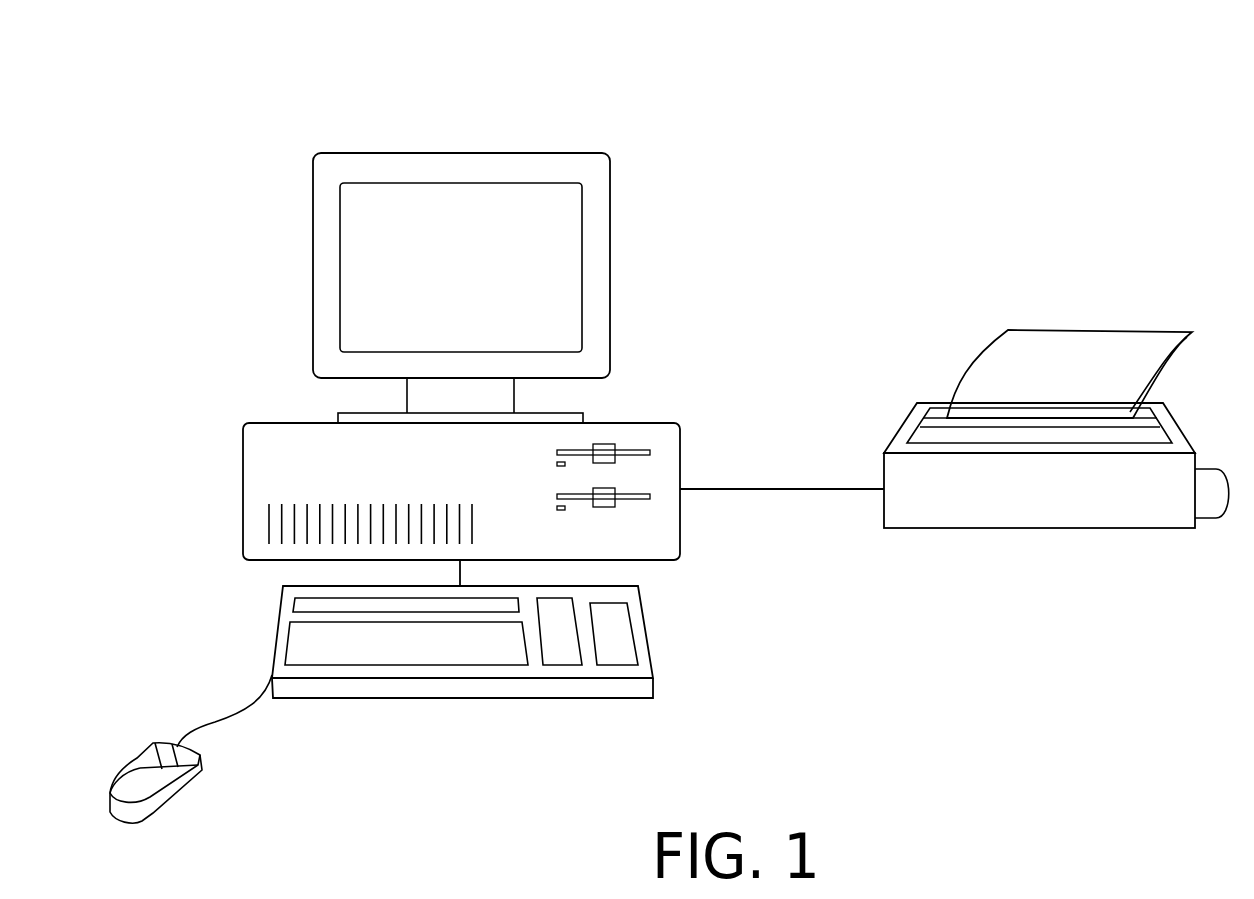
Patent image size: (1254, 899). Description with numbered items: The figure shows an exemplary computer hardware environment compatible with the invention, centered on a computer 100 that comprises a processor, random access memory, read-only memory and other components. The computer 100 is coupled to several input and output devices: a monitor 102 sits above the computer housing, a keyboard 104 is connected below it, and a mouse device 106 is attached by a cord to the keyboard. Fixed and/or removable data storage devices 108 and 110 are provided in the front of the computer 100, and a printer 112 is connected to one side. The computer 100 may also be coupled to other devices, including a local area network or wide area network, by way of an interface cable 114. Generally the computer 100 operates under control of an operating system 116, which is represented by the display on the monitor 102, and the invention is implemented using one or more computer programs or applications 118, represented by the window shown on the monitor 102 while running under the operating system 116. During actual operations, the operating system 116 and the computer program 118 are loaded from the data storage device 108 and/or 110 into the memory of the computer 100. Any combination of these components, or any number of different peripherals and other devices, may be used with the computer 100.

The computer 100 is at (614, 90).
The monitor 102 is at (313, 270).
The keyboard 104 is at (612, 690).
The mouse device 106 is at (135, 780).
The data storage device 108 is at (648, 450).
The data storage device 110 is at (635, 500).
The printer 112 is at (1002, 525).
The interface cable 114 is at (650, 422).
The operating system 116 is at (338, 208).
The computer program 118 is at (463, 183).